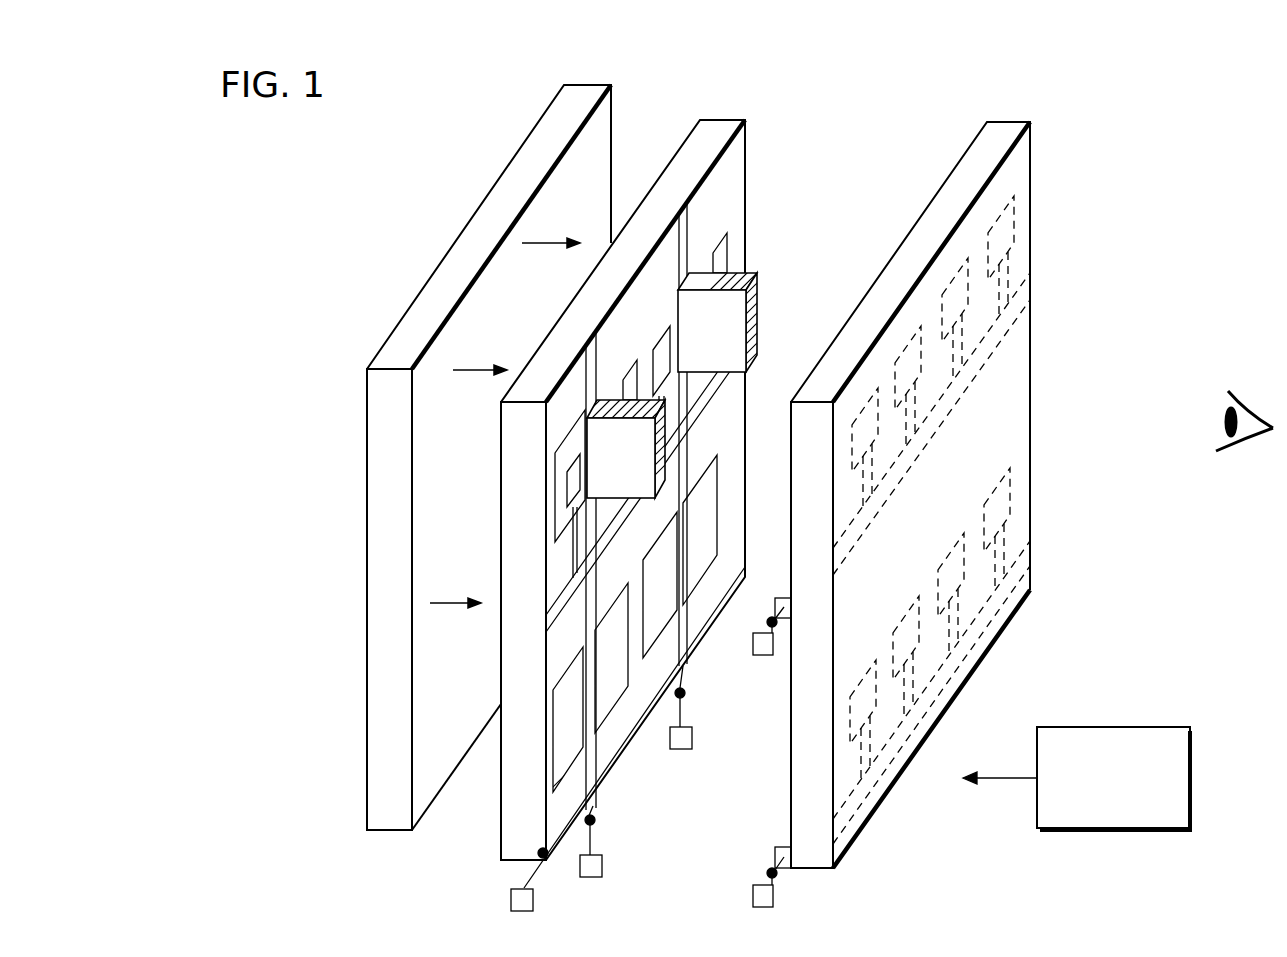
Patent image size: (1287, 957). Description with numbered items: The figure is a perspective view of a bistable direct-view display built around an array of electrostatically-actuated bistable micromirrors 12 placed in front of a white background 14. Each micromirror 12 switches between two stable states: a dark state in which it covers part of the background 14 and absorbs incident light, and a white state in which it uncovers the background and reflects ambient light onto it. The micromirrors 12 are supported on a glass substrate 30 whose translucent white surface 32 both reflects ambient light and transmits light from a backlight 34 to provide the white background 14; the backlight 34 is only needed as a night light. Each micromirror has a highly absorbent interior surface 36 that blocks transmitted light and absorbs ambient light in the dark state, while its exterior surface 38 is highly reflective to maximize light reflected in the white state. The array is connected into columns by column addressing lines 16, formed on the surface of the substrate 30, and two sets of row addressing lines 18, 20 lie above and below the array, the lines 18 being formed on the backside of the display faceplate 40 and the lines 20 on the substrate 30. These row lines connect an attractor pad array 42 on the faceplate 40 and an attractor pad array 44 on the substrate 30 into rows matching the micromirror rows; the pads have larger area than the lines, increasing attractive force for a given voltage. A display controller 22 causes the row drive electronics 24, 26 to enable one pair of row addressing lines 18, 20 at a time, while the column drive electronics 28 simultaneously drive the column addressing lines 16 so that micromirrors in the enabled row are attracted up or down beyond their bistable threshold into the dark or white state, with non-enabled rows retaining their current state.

The electrostatically-actuated bistable micromirrors 12 is at (770, 494).
The white background 14 is at (776, 143).
The column addressing lines 16 is at (684, 222).
The row addressing lines 18 is at (780, 605).
The row addressing lines 20 is at (560, 603).
The display controller 22 is at (1113, 727).
The row drive electronics 24 is at (773, 898).
The row drive electronics 26 is at (534, 902).
The column drive electronics 28 is at (604, 867).
The glass substrate 30 is at (718, 124).
The translucent white surface 32 is at (732, 166).
The backlight 34 is at (386, 520).
The absorbent interior surface 36 is at (704, 492).
The exterior surfaces 38 is at (728, 312).
The display faceplate 40 is at (939, 479).
The attractor pad array 42 is at (1001, 238).
The attractor pad array 44 is at (571, 483).